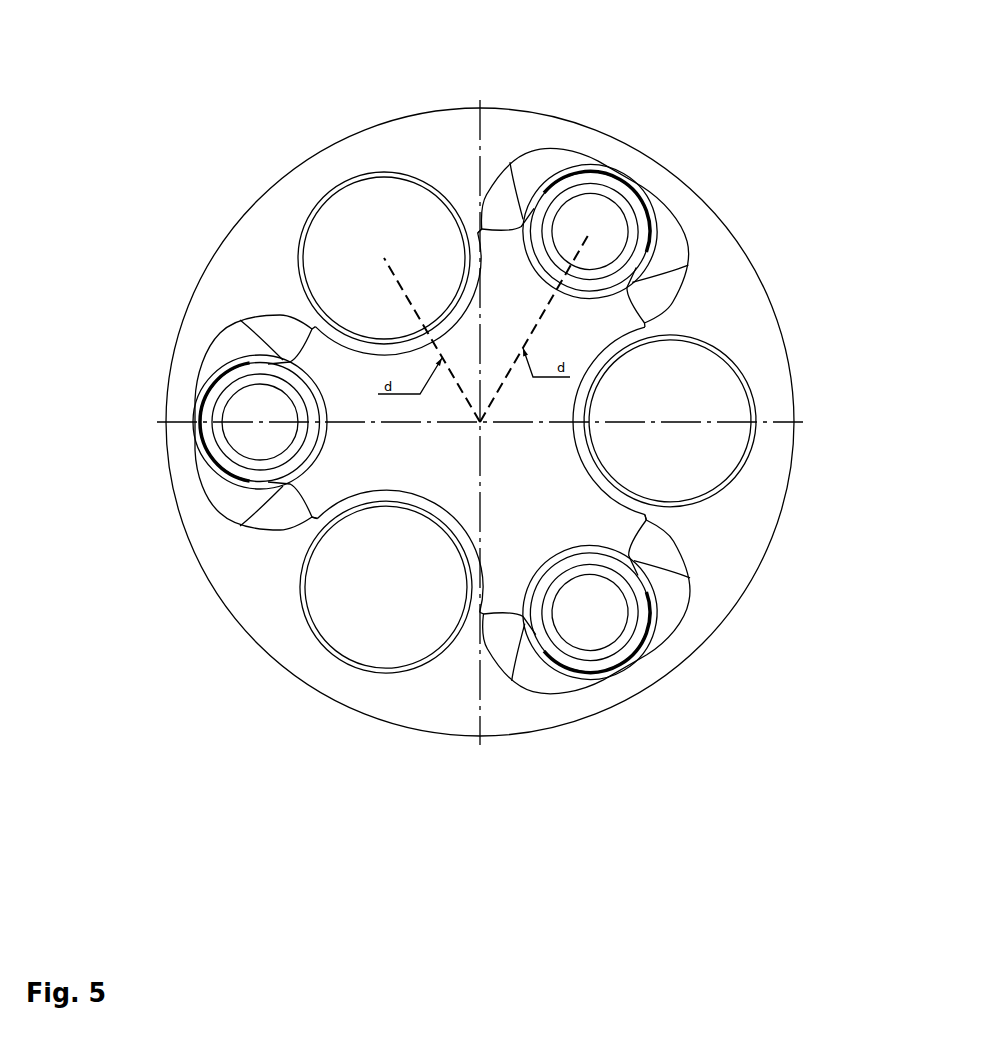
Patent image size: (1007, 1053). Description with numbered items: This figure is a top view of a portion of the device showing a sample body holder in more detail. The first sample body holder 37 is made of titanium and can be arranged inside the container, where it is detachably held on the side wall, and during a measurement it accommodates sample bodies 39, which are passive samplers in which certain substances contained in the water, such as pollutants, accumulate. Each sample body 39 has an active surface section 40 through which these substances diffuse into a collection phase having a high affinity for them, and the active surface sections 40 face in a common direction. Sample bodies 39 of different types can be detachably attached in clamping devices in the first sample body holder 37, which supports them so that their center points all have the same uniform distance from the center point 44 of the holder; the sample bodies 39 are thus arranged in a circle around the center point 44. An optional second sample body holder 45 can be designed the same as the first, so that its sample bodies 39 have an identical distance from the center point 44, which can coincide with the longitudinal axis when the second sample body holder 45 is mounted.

The first sample body holder 37 is at (448, 152).
The second sample body holder 45 is at (448, 152).
The sample body 39 is at (455, 235).
The active surface section 40 is at (365, 260).
The center point 44 is at (484, 424).